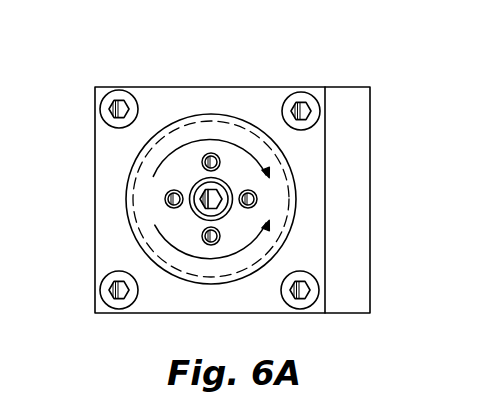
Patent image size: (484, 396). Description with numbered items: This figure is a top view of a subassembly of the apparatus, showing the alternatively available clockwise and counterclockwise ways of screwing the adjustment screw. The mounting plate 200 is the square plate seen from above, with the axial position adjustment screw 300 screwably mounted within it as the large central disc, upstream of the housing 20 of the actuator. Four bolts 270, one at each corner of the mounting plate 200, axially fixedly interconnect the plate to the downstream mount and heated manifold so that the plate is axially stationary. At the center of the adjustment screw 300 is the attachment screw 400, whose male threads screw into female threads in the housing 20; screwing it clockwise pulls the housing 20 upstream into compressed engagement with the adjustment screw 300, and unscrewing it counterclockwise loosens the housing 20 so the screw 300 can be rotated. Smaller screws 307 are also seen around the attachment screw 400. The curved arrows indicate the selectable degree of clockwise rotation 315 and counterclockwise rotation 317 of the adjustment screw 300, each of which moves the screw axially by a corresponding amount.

The actuator housing 20 is at (345, 88).
The mounting plate 200 is at (190, 87).
The bolts 270 is at (119, 90).
The axial position adjustment screw 300 is at (228, 126).
The disc fastening screws 307 is at (204, 168).
The clockwise rotation 315 is at (238, 142).
The counterclockwise rotation 317 is at (233, 262).
The attachment screw 400 is at (192, 207).